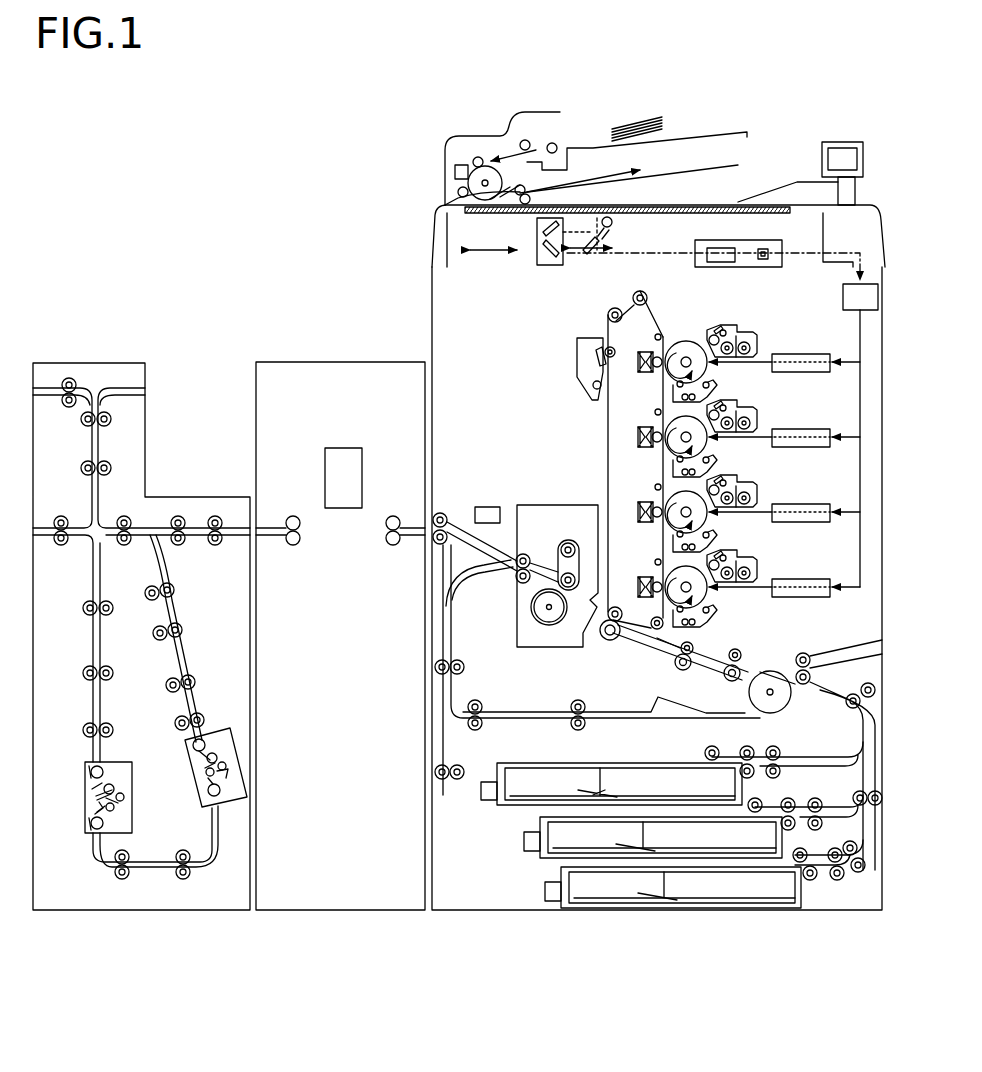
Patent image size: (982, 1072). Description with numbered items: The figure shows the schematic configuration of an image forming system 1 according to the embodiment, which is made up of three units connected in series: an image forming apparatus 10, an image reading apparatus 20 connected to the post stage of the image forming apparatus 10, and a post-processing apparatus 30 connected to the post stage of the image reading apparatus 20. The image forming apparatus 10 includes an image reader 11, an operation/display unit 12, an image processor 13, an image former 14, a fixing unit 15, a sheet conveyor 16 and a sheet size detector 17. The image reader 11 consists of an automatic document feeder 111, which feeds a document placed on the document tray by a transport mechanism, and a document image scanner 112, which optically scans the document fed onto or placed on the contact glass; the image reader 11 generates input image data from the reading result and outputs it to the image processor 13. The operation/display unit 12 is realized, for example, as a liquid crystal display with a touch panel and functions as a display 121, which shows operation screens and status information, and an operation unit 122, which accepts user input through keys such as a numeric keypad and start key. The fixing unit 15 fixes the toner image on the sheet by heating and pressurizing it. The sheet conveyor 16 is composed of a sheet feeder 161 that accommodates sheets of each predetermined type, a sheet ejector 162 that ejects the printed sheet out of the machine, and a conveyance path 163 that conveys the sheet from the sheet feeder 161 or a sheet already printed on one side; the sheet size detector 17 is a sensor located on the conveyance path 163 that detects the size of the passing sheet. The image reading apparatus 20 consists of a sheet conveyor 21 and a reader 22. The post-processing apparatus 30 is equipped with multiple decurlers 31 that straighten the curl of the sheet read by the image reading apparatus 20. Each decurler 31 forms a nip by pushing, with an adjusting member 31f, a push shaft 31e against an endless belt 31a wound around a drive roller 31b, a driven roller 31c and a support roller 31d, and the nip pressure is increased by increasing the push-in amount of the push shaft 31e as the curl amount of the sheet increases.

The image forming system 1 is at (324, 106).
The image forming apparatus 10 is at (677, 99).
The image reader 11 is at (358, 155).
The automatic document feeder 111 is at (443, 186).
The document image scanner 112 is at (436, 246).
The operation/display unit 12 is at (830, 142).
The display 121 is at (842, 159).
The operation unit 122 is at (846, 191).
The image processor 13 is at (843, 299).
The image former 14 is at (584, 417).
The fixing unit 15 is at (559, 505).
The sheet conveyor 16 is at (493, 805).
The sheet feeder 161 is at (683, 756).
The sheet ejector 162 is at (445, 504).
The conveyance path 163 is at (637, 652).
The sheet size detector 17 is at (490, 508).
The image reading apparatus 20 is at (350, 350).
The sheet conveyor 21 is at (393, 555).
The reader 22 is at (341, 448).
The post-processing apparatus 30 is at (97, 353).
The decurler 31 is at (114, 758).
The endless belt 31a is at (122, 796).
The drive roller 31b is at (116, 808).
The driven roller 31c is at (114, 782).
The support roller 31d is at (124, 801).
The push shaft 31e is at (98, 797).
The adjusting member 31f is at (97, 804).